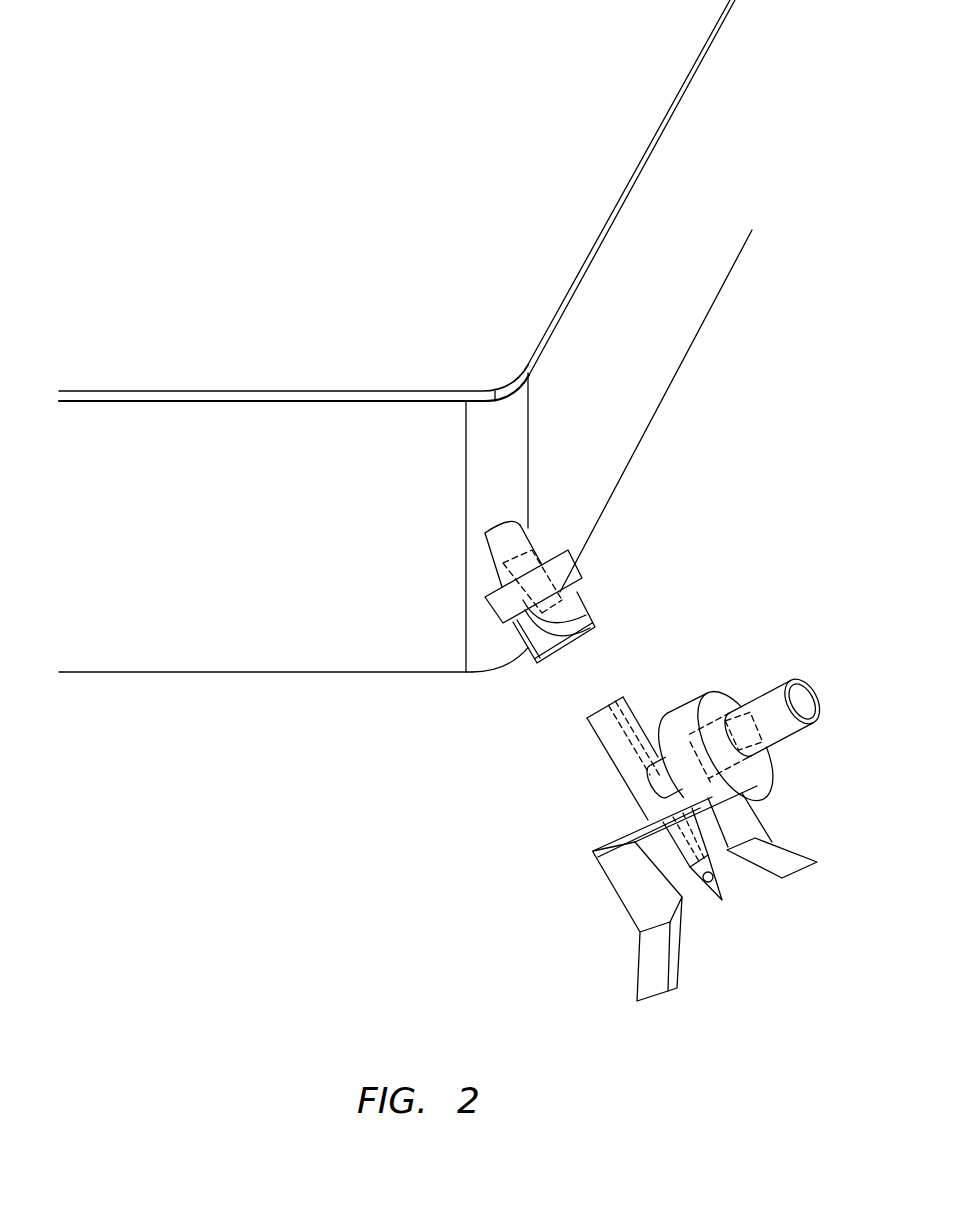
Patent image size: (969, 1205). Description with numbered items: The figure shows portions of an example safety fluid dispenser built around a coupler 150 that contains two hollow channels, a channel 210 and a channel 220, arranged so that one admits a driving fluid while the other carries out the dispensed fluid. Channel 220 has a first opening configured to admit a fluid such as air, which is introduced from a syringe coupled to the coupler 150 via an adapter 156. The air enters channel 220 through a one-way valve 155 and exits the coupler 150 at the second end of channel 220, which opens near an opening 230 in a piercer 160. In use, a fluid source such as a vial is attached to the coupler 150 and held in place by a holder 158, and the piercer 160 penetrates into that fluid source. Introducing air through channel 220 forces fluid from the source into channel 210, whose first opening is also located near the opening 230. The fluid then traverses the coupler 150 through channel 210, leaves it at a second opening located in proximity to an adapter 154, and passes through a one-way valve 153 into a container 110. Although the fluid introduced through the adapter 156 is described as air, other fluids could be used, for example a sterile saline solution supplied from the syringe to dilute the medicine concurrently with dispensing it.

The container 110 is at (158, 657).
The coupler 150 is at (638, 813).
The one-way valve 153 is at (488, 598).
The adapter 154 is at (575, 565).
The one-way valve 155 is at (717, 730).
The adapter 156 is at (790, 731).
The holder 158 is at (640, 943).
The piercer 160 is at (710, 893).
The channel 210 is at (618, 733).
The channel 220 is at (690, 710).
The opening 230 is at (713, 883).